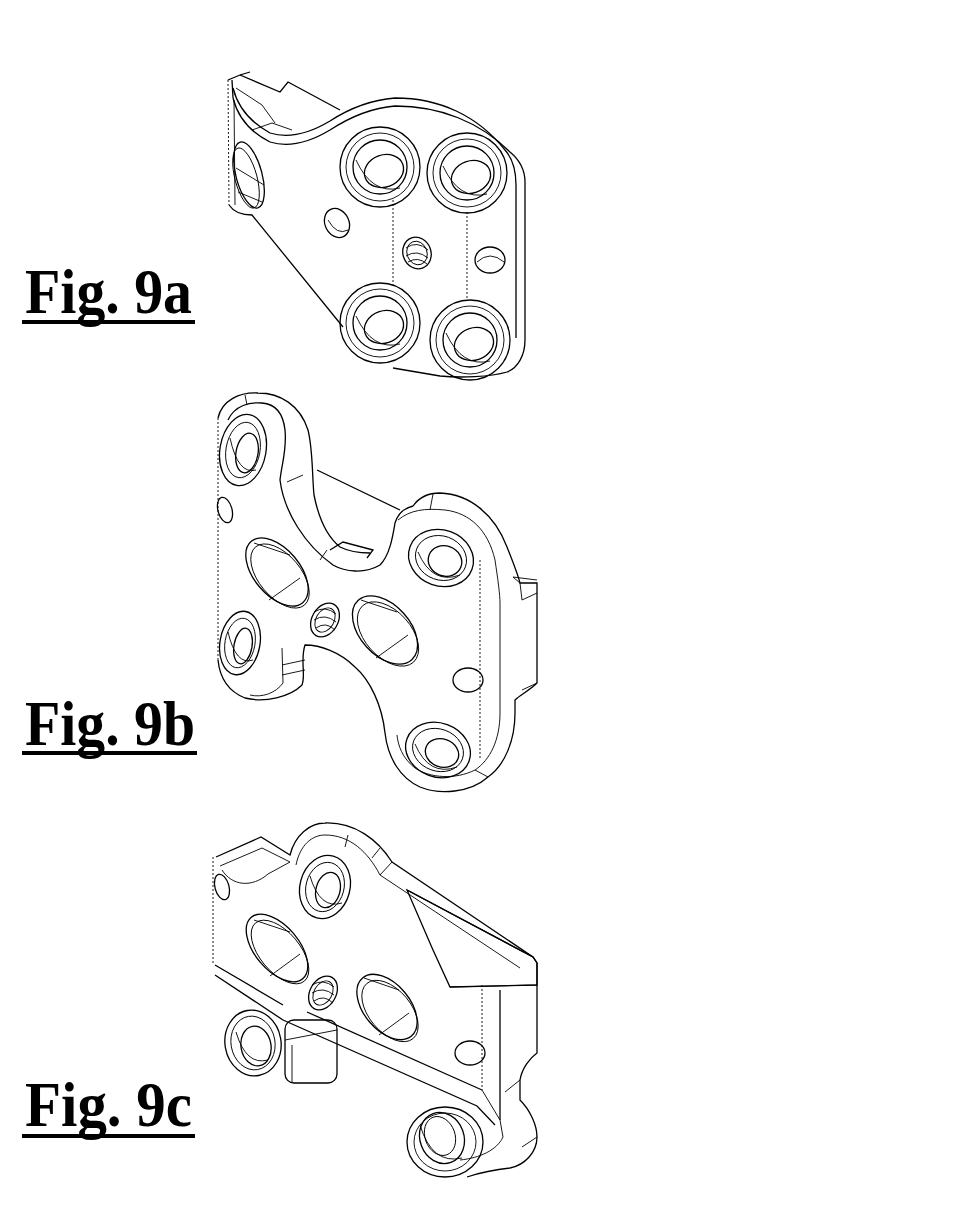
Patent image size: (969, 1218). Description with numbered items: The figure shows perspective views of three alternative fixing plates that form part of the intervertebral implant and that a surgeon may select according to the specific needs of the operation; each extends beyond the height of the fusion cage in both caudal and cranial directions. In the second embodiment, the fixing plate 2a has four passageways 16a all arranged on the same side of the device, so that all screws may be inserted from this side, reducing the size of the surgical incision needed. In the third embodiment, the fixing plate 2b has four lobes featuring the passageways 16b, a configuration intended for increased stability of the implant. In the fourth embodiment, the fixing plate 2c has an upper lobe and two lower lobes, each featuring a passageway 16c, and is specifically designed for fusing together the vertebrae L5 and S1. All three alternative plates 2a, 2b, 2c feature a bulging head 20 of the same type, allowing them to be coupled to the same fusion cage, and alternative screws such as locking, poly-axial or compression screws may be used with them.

In FIG. 9A, the fixing plate 2a is at (437, 225).
In FIG. 9B, the fixing plate 2b is at (373, 628).
In FIG. 9C, the fixing plate 2c is at (436, 974).
In FIG. 9A, the passageways 16a is at (470, 187).
In FIG. 9B, the passageways 16b is at (240, 637).
In FIG. 9C, the passageway 16c is at (335, 878).
In FIG. 9A, the bulging head 20 is at (290, 83).
In FIG. 9B, the bulging head 20 is at (360, 500).
In FIG. 9C, the bulging head 20 is at (430, 923).